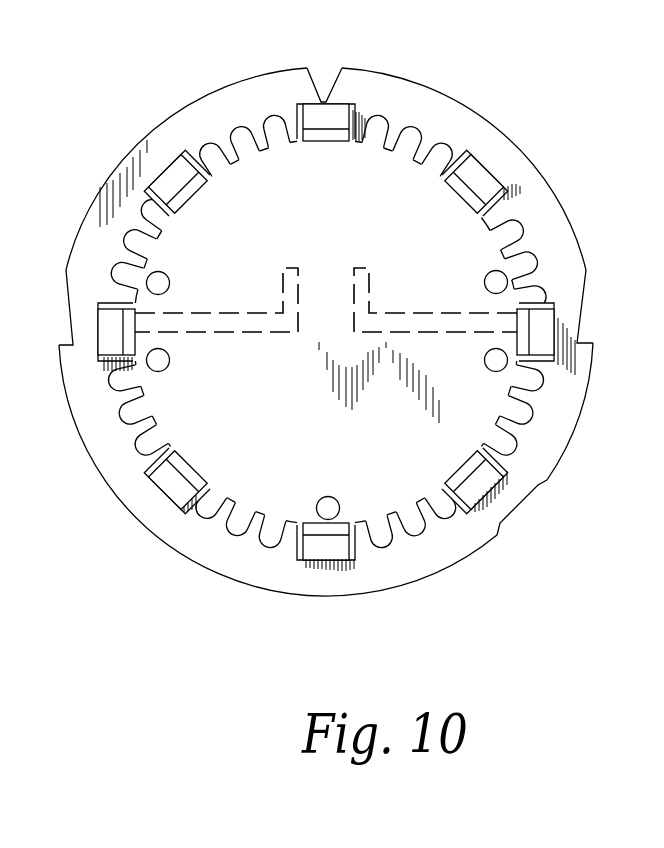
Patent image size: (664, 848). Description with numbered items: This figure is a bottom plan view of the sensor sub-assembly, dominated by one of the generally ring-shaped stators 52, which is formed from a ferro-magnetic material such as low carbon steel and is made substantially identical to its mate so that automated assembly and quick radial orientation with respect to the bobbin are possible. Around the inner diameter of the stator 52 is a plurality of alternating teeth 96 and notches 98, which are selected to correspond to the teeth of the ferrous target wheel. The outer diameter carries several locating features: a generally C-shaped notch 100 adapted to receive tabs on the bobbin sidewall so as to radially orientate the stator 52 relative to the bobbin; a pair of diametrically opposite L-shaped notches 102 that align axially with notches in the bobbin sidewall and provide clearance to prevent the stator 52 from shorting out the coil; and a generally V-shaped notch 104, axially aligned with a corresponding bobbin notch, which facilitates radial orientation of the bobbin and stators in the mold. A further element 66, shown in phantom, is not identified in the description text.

The stator 52 is at (548, 435).
The mounting bracket (phantom) 66 is at (437, 322).
The teeth 96 is at (400, 518).
The notches 98 is at (380, 528).
The C-shaped notch 100 is at (528, 492).
The L-shaped notches 102 is at (72, 341).
The V-shaped notch 104 is at (326, 83).